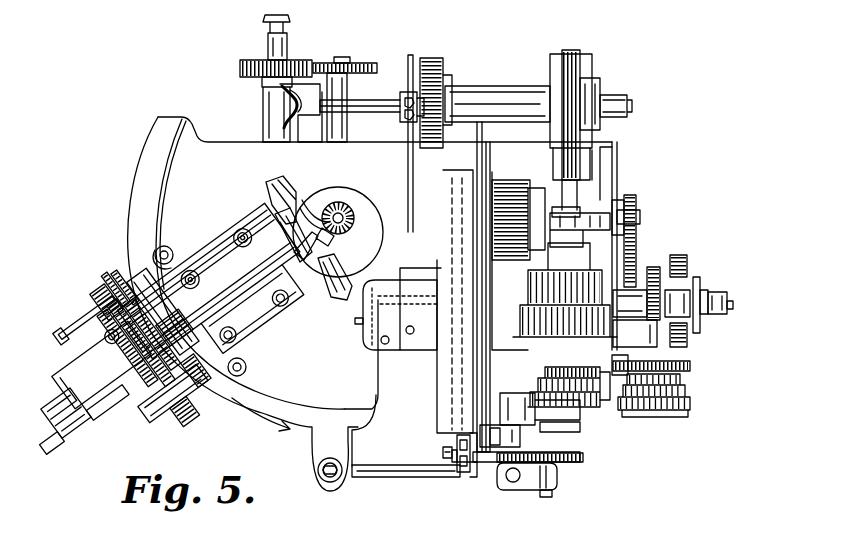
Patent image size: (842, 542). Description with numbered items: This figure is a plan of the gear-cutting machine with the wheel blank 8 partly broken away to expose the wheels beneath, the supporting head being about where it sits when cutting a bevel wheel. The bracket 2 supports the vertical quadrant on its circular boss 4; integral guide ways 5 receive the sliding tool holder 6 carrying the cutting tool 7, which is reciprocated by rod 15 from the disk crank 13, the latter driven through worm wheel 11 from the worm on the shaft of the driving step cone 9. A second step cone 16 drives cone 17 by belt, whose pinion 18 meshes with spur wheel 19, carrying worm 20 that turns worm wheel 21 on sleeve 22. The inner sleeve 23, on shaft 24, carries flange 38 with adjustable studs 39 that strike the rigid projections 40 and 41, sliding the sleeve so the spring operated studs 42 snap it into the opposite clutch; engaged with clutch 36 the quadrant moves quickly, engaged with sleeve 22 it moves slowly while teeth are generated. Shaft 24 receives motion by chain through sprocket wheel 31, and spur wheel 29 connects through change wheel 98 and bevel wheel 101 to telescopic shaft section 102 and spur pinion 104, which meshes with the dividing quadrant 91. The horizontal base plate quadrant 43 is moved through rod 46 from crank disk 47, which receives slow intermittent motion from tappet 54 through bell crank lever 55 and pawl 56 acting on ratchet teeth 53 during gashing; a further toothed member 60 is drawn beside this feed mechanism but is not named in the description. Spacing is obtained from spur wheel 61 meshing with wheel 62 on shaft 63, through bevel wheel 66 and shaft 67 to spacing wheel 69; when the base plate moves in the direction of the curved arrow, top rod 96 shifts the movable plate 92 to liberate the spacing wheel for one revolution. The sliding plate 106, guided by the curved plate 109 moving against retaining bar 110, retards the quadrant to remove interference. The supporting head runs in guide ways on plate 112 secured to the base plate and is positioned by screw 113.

The bracket 2 is at (487, 162).
The circular boss 4 is at (518, 220).
The guide ways 5 is at (436, 340).
The sliding tool holder 6 is at (396, 309).
The cutting tool 7 is at (356, 318).
The wheel blank 8 is at (286, 183).
The step cone 9 is at (565, 290).
The worm wheel 11 is at (570, 54).
The disk crank 13 is at (436, 58).
The rod 15 is at (400, 126).
The step cone 16 is at (536, 382).
The cone 17 is at (684, 398).
The pinion 18 is at (640, 360).
The spur wheel 19 is at (690, 367).
The worm 20 is at (640, 288).
The worm wheel 21 is at (657, 268).
The sleeve 22 is at (635, 333).
The inner sleeve 23 is at (688, 290).
The shaft 24 is at (740, 304).
The spur wheel 29 is at (636, 240).
The sprocket wheel 31 is at (601, 90).
The clutch 36 is at (728, 294).
The flange 38 is at (704, 290).
The adjustable stud 39 is at (700, 292).
The rigid projection 40 is at (178, 398).
The rigid projection 41 is at (174, 252).
The spring operated studs 42 is at (685, 340).
The base plate quadrant 43 is at (372, 304).
The rod 46 is at (406, 478).
The crank disk 47 is at (560, 478).
The ratchet teeth 53 is at (492, 464).
The tappet 54 is at (575, 430).
The bell crank lever 55 is at (560, 434).
The pawl 56 is at (500, 434).
The rack 60 is at (585, 457).
The spur wheel 61 is at (240, 67).
The wheel 62 is at (370, 67).
The shaft 63 is at (344, 57).
The bevel wheel 66 is at (330, 244).
The shaft 67 is at (122, 352).
The spacing wheel 69 is at (106, 302).
The dividing quadrant 91 is at (125, 287).
The movable plate 92 is at (115, 289).
The top rod 96 is at (85, 318).
The change wheel 98 is at (636, 200).
The bevel wheel 101 is at (350, 212).
The telescopic shaft section 102 is at (315, 206).
The spur pinion 104 is at (450, 462).
The sliding plate 106 is at (443, 446).
The curved plate 109 is at (475, 476).
The retaining bar 110 is at (464, 476).
The plate 112 is at (630, 104).
The screw 113 is at (84, 420).